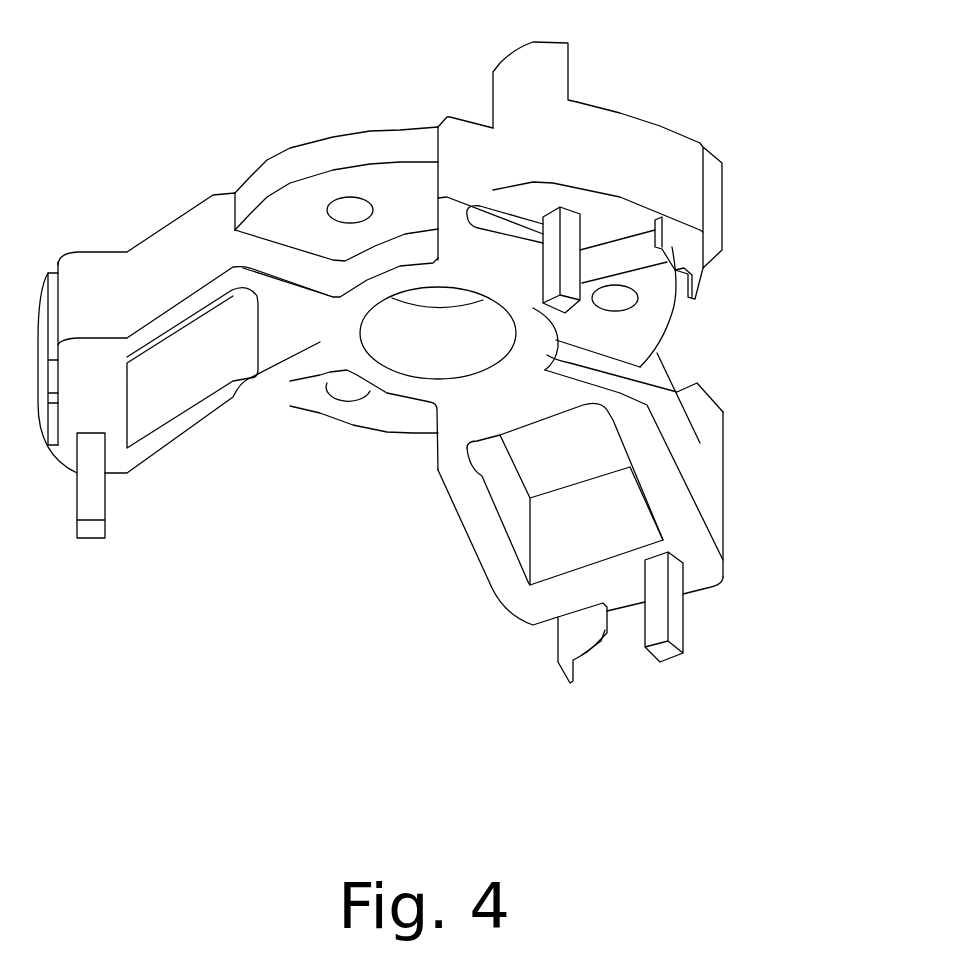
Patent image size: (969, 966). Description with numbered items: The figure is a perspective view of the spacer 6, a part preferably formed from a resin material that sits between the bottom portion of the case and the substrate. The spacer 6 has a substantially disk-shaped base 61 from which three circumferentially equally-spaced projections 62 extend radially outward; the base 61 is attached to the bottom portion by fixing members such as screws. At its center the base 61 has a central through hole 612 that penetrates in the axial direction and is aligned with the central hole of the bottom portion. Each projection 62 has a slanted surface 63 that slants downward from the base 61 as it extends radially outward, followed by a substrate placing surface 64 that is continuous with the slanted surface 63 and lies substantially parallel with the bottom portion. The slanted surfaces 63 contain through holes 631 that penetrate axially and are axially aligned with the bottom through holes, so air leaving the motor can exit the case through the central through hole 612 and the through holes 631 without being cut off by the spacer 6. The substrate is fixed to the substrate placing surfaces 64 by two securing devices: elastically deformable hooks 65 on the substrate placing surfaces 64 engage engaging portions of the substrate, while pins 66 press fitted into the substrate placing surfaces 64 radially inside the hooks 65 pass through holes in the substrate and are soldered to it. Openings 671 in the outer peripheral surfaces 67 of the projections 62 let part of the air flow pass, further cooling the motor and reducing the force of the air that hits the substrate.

The spacer 6 is at (53, 54).
The base 61 is at (378, 190).
The central through hole 612 is at (482, 335).
The projection 62 is at (200, 233).
The slanted surface 63 is at (179, 430).
The through hole 631 is at (580, 440).
The substrate placing surface 64 is at (541, 607).
The hook 65 is at (600, 648).
The pin 66 is at (675, 602).
The outer peripheral surface 67 is at (628, 146).
The opening 671 is at (653, 82).